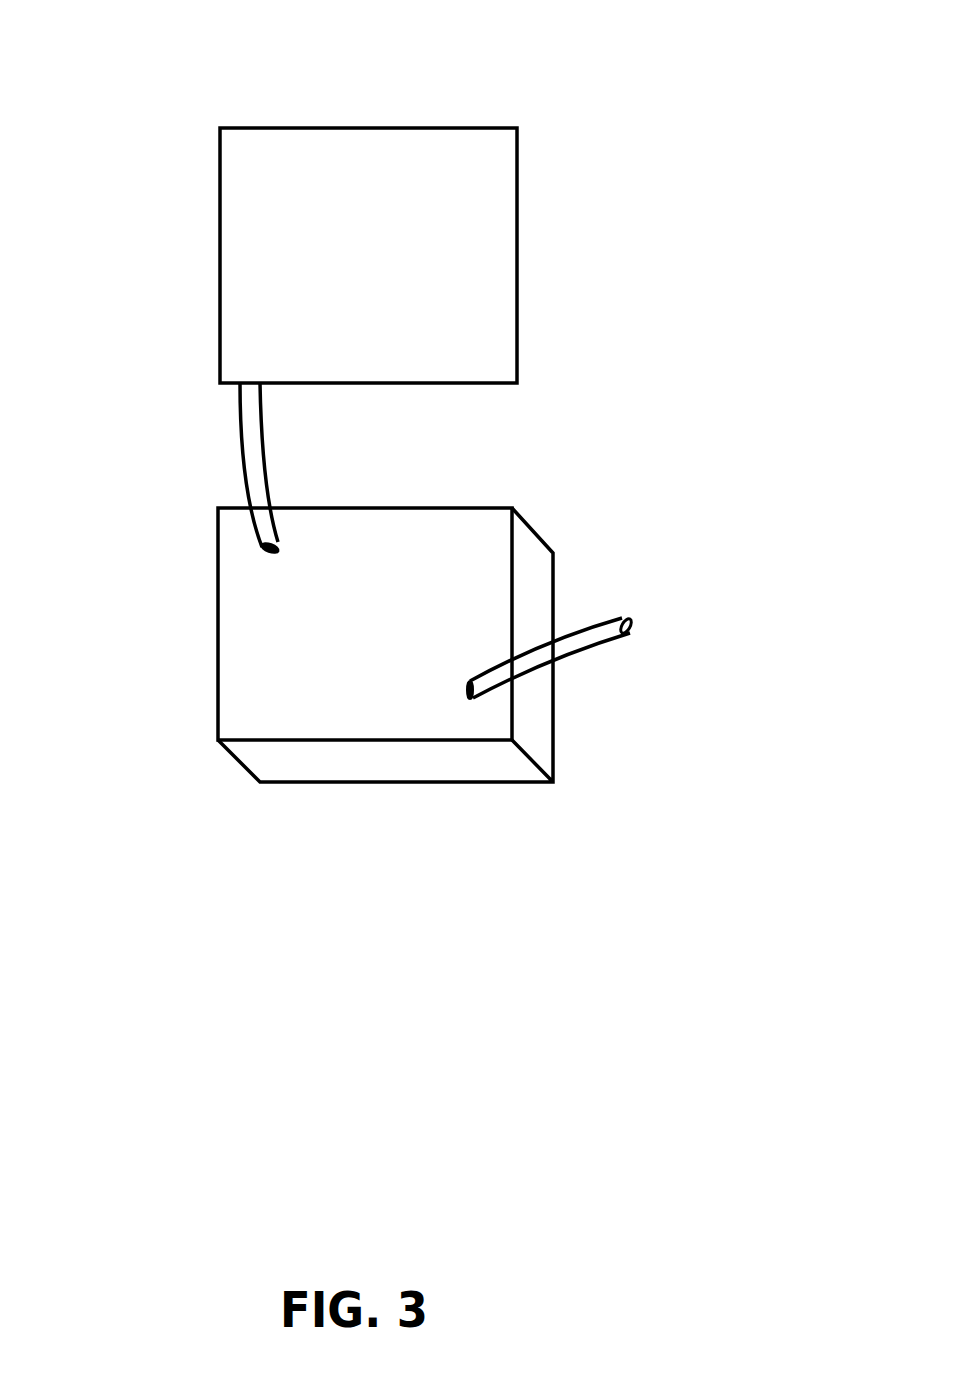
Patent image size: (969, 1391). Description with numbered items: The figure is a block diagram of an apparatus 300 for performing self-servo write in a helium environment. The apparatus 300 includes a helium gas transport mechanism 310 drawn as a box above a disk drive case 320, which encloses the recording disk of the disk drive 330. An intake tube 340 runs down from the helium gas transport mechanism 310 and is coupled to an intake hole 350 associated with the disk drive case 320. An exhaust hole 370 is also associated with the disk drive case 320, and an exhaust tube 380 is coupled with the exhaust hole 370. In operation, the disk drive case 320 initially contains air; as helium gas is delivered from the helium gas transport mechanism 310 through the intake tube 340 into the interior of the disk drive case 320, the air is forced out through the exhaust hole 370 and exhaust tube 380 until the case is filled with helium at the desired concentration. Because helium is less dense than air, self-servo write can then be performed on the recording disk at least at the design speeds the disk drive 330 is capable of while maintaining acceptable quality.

The apparatus 300 is at (516, 52).
The helium gas transport mechanism 310 is at (395, 330).
The disk drive case 320 is at (395, 659).
The disk drive 330 is at (533, 571).
The intake tube 340 is at (348, 450).
The intake hole 350 is at (262, 549).
The exhaust hole 370 is at (469, 695).
The exhaust tube 380 is at (590, 663).